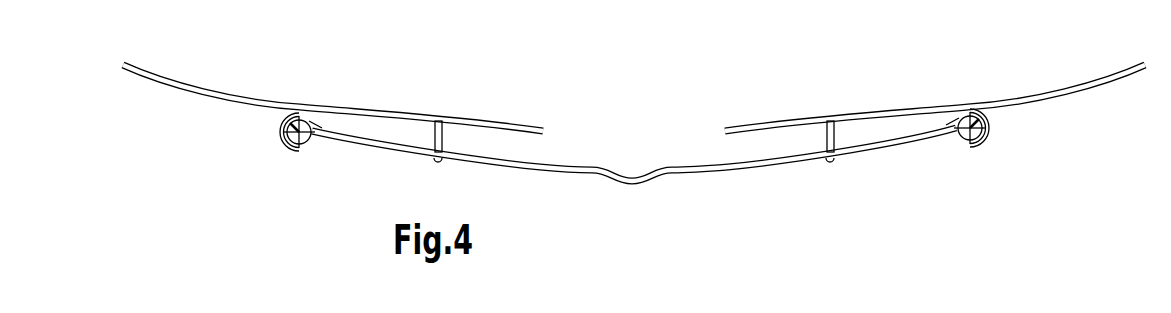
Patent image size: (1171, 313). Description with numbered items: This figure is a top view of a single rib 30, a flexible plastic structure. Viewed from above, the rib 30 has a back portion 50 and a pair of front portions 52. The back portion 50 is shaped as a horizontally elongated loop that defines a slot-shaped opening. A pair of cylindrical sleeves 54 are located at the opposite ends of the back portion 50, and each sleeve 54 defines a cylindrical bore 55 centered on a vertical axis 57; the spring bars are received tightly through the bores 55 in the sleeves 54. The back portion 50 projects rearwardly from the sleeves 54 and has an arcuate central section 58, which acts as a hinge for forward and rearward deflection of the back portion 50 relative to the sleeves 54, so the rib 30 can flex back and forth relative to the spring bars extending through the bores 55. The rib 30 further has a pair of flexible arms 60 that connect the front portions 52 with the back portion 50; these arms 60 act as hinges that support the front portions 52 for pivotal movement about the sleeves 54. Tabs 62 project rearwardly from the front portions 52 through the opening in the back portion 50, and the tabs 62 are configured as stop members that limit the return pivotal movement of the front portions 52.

The rib 30 is at (152, 52).
The back portion 50 is at (559, 173).
The front portions 52 is at (201, 89).
The cylindrical sleeves 54 is at (305, 149).
The cylindrical bore 55 is at (316, 152).
The vertical axis 57 is at (273, 118).
The arcuate central section 58 is at (653, 186).
The flexible arms 60 is at (280, 134).
The tabs 62 is at (447, 130).